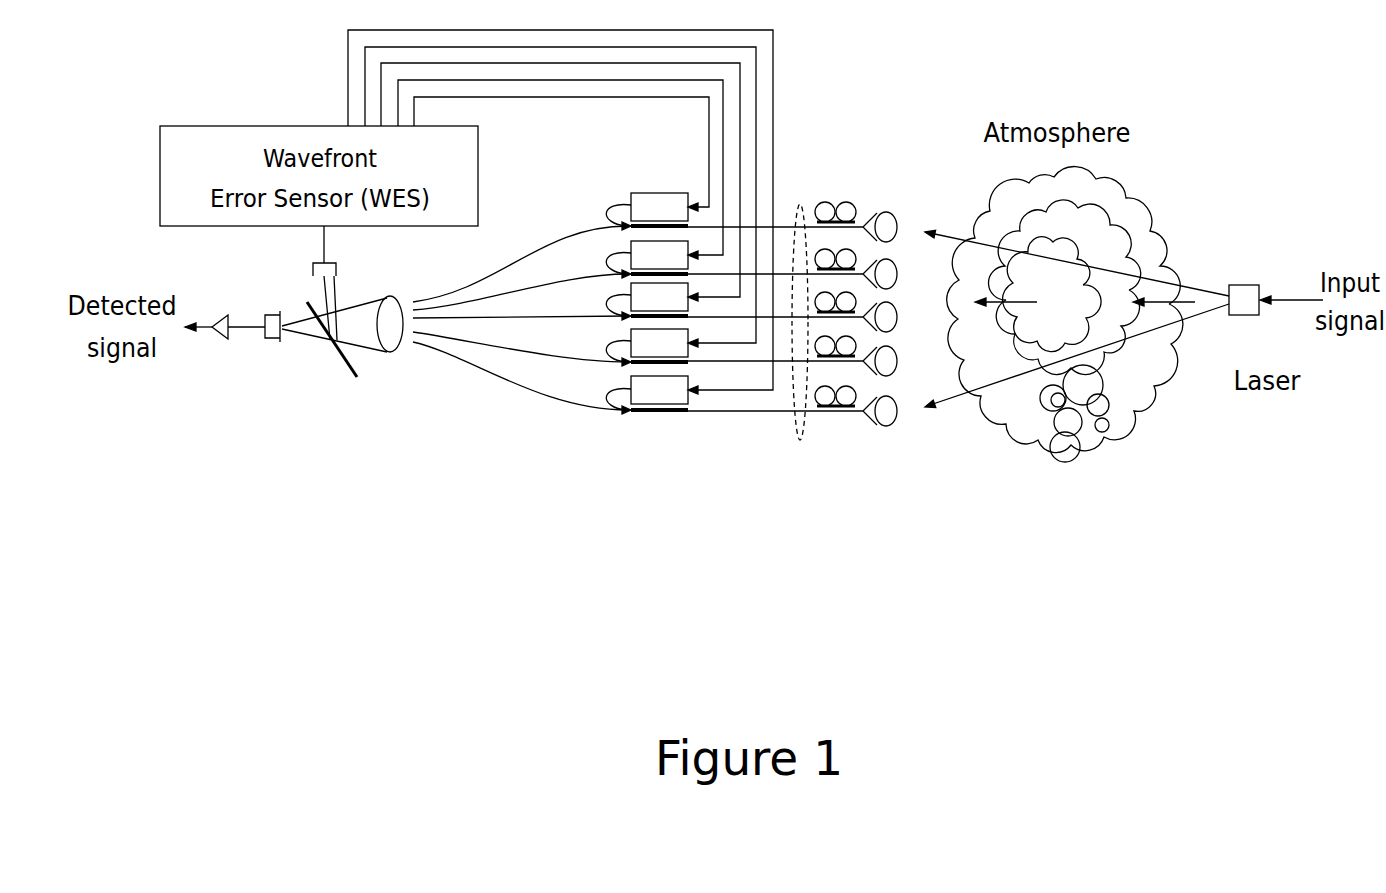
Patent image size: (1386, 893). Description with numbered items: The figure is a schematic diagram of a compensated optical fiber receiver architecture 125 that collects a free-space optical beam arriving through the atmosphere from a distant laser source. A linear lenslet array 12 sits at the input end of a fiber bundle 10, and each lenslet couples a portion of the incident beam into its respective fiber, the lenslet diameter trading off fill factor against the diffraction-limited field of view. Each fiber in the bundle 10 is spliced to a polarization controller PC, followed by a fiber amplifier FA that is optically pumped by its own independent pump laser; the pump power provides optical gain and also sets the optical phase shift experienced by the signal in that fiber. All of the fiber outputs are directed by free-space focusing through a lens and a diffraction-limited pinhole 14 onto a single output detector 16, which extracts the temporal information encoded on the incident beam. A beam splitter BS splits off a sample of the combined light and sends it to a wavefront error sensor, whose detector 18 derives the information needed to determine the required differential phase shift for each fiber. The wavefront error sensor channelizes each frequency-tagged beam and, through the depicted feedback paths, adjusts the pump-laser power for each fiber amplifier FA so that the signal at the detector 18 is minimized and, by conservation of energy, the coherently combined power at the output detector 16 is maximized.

The fiber bundle 10 is at (662, 302).
The lenslet array 12 is at (894, 188).
The diffraction-limited pinhole 14 is at (285, 313).
The output detector 16 is at (268, 340).
The WES detector 18 is at (338, 270).
The fiber receiver architecture 125 is at (315, 533).
The beam splitter BS is at (345, 356).
The fiber amplifier FA is at (631, 317).
The polarization controller PC is at (838, 416).